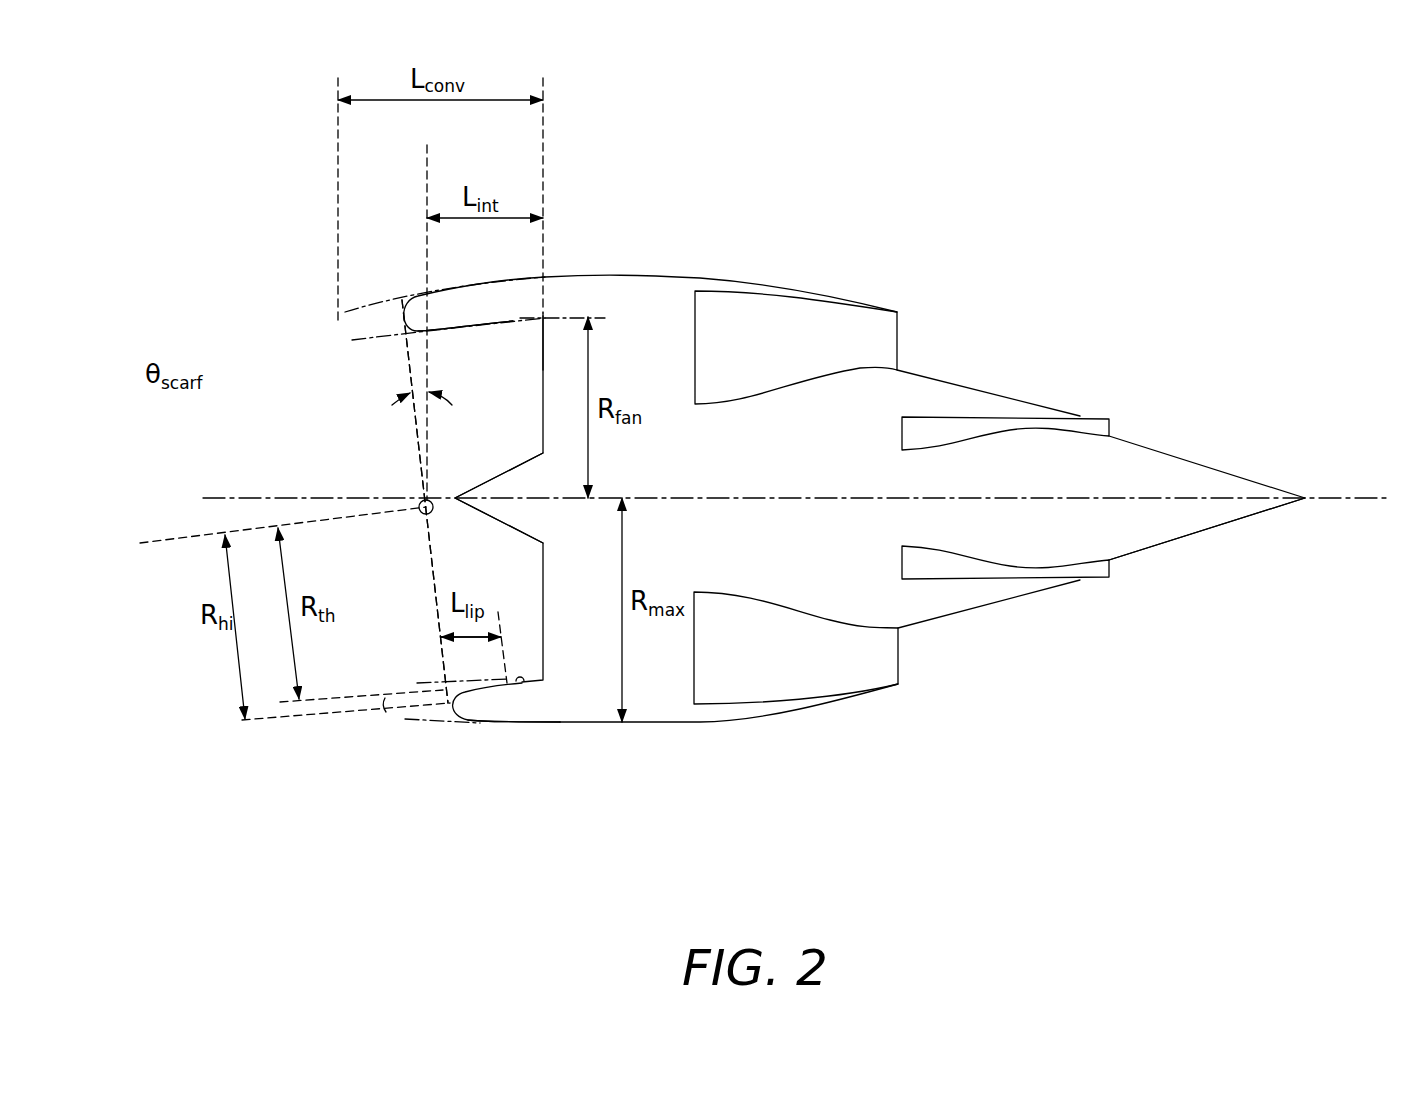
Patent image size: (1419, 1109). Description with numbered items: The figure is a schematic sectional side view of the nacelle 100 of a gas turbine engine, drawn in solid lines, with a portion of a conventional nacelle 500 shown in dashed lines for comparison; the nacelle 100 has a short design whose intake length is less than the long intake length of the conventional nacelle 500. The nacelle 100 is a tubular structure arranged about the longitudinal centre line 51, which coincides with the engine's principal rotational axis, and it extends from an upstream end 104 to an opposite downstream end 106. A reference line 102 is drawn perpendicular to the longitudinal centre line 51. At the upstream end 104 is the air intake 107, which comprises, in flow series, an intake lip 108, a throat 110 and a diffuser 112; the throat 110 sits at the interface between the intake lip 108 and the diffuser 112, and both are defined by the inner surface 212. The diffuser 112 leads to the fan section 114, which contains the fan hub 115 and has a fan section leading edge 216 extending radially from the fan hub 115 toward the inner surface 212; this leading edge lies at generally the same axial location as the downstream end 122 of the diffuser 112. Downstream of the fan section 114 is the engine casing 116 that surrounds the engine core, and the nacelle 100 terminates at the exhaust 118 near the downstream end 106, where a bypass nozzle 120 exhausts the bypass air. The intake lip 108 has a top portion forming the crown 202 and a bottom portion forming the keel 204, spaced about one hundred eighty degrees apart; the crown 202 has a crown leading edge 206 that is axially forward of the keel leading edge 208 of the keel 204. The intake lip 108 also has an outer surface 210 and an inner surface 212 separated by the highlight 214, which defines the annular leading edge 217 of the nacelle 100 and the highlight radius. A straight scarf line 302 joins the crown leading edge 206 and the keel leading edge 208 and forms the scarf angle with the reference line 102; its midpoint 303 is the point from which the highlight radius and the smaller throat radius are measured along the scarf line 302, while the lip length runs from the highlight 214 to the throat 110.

The longitudinal centre line 51 is at (1385, 497).
The nacelle 100 is at (1251, 227).
The reference line 102 is at (425, 150).
The upstream end 104 is at (405, 426).
The downstream end 106 is at (1299, 467).
The air intake 107 is at (443, 366).
The intake lip 108 is at (439, 746).
The throat 110 is at (507, 685).
The diffuser 112 is at (510, 324).
The fan section 114 is at (655, 662).
The fan hub 115 is at (522, 508).
The engine casing 116 is at (858, 570).
The exhaust 118 is at (1249, 561).
The bypass nozzle 120 is at (869, 338).
The downstream end of the diffuser 122 is at (543, 312).
The crown 202 is at (417, 295).
The keel 204 is at (448, 715).
The crown leading edge 206 is at (358, 305).
The keel leading edge 208 is at (398, 717).
The outer surface 210 is at (478, 722).
The inner surface 212 is at (524, 684).
The highlight 214 is at (417, 444).
The fan section leading edge 216 is at (543, 368).
The leading edge 217 is at (446, 652).
The scarf line 302 is at (423, 478).
The midpoint 303 is at (424, 513).
The conventional nacelle 500 is at (355, 340).